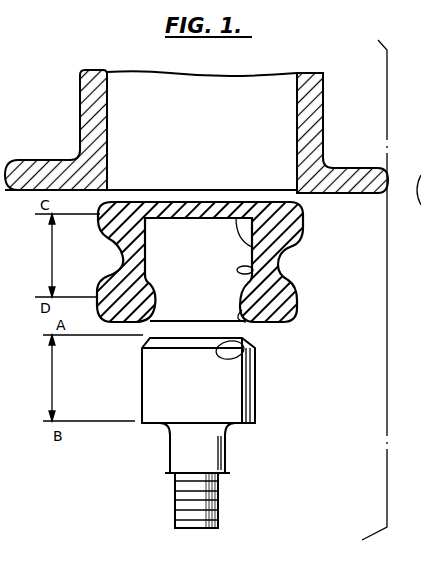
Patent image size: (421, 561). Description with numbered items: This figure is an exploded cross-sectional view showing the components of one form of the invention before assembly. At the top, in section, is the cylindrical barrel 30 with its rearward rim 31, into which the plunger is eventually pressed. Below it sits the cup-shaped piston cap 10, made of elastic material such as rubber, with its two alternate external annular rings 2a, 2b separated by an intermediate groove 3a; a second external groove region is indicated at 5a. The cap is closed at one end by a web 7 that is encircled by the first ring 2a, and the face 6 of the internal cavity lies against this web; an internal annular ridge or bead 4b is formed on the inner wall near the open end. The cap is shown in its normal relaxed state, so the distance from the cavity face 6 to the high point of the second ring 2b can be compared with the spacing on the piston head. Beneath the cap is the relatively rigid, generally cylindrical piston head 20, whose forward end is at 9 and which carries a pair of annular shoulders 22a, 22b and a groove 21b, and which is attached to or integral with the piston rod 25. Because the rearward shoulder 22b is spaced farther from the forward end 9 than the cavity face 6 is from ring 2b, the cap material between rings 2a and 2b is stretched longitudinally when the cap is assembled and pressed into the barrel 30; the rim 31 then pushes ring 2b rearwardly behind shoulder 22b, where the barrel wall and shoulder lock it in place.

The cylindrical barrel 30 is at (297, 113).
The rearward rim 31 is at (300, 183).
The face of the cavity 6 is at (280, 252).
The web 7 is at (206, 213).
The first external annular ring 2a is at (300, 220).
The intermediate groove 3a is at (280, 270).
The lower lobe neck 5a is at (265, 283).
The second external annular ring 2b is at (296, 313).
The internal annular ridge 4b is at (240, 325).
The piston cap 10 is at (208, 267).
The piston head 20 is at (214, 386).
The forward end of the piston head 9 is at (244, 362).
The annular shoulder 22a is at (250, 342).
The rearward annular shoulder 22b is at (252, 425).
The groove 21b is at (225, 453).
The piston rod 25 is at (197, 508).